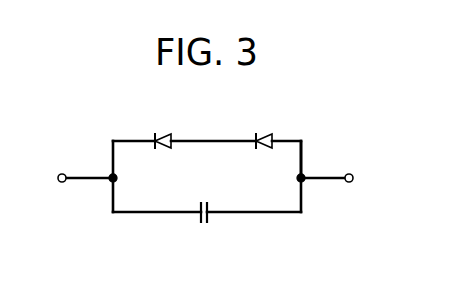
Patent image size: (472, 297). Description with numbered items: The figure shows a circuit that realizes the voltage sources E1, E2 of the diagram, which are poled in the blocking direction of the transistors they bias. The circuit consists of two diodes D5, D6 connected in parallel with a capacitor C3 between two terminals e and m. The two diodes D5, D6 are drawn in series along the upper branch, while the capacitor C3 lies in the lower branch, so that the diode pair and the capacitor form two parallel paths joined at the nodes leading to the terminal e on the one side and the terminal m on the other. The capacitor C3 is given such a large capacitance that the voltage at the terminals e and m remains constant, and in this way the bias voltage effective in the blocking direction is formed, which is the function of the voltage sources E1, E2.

The terminal e is at (66, 162).
The terminal m is at (348, 159).
The diode D5 is at (164, 129).
The diode D6 is at (264, 129).
The capacitor C3 is at (205, 227).
The voltage source E1 is at (326, 142).
The voltage source E2 is at (280, 156).